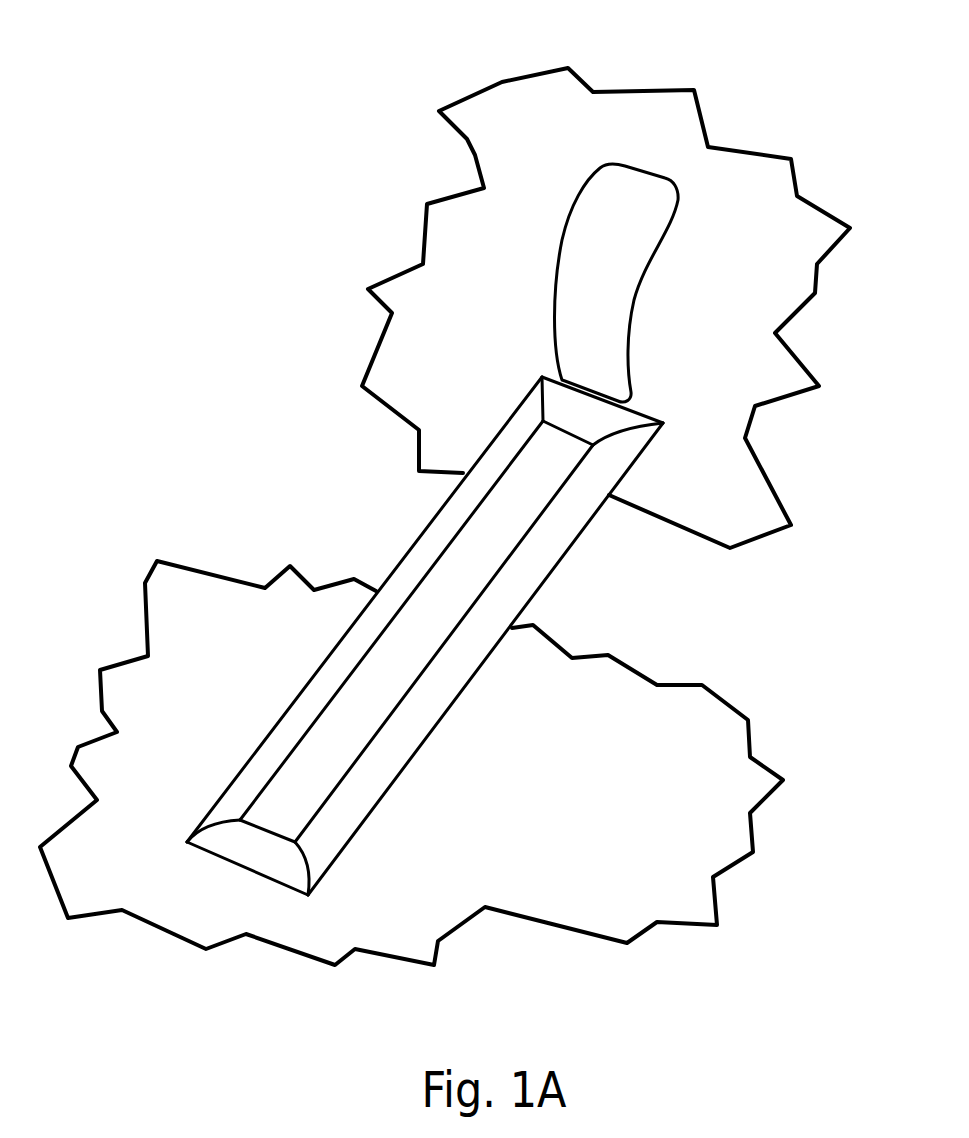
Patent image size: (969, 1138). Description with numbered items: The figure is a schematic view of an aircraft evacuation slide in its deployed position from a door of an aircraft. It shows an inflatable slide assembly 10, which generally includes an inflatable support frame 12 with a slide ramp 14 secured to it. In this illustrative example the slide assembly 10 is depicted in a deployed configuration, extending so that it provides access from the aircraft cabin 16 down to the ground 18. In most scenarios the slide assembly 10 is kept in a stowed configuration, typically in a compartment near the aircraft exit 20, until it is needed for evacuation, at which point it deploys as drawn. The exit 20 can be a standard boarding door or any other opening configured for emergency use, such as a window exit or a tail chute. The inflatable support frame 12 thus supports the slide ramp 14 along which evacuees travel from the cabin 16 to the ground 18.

The inflatable slide assembly 10 is at (444, 454).
The inflatable support frame 12 is at (444, 636).
The slide ramp 14 is at (400, 666).
The aircraft cabin 16 is at (632, 200).
The ground 18 is at (497, 820).
The aircraft exit 20 is at (650, 253).